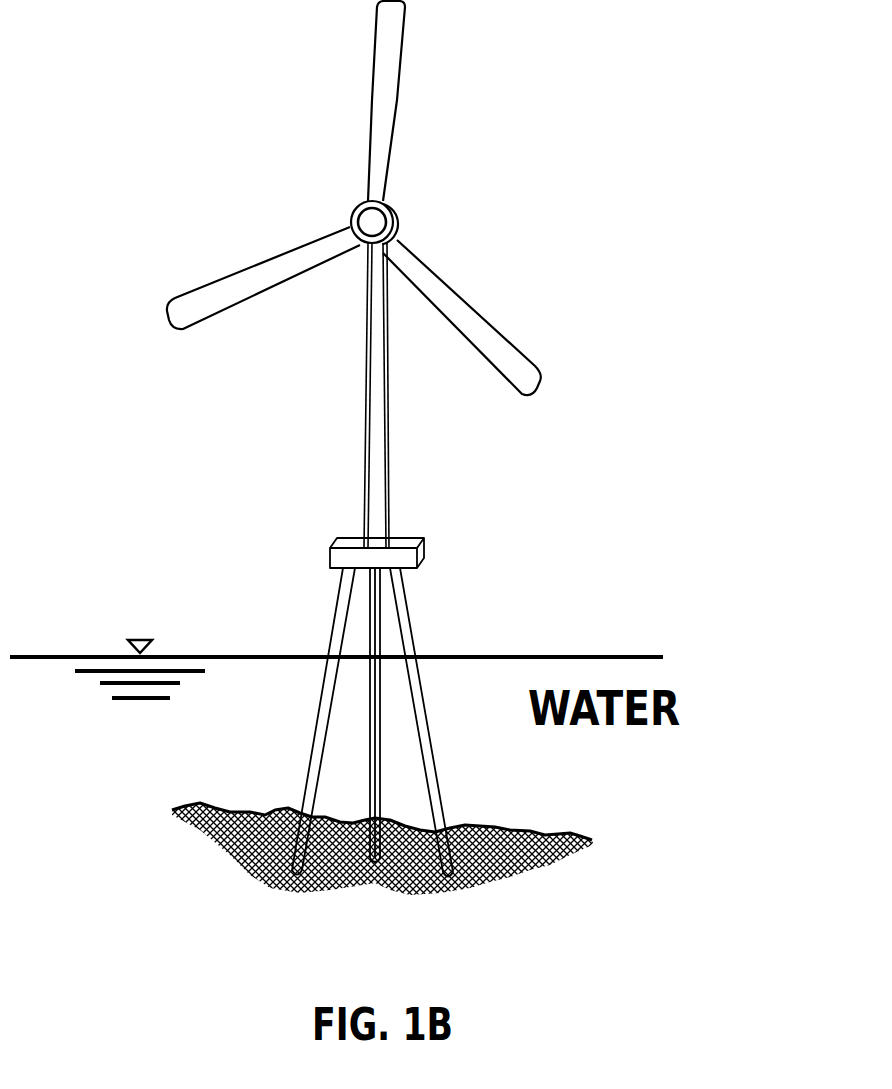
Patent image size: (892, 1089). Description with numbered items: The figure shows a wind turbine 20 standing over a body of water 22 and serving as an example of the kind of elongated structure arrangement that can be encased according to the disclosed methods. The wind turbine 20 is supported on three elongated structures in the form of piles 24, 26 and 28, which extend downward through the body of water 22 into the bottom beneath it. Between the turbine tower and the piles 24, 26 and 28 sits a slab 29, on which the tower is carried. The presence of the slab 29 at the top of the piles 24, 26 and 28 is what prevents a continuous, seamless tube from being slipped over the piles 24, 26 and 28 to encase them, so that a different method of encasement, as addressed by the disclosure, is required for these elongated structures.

The wind turbine 20 is at (450, 439).
The body of water 22 is at (475, 654).
The pile 24 is at (427, 713).
The pile 26 is at (307, 788).
The pile 28 is at (372, 733).
The slab 29 is at (323, 553).